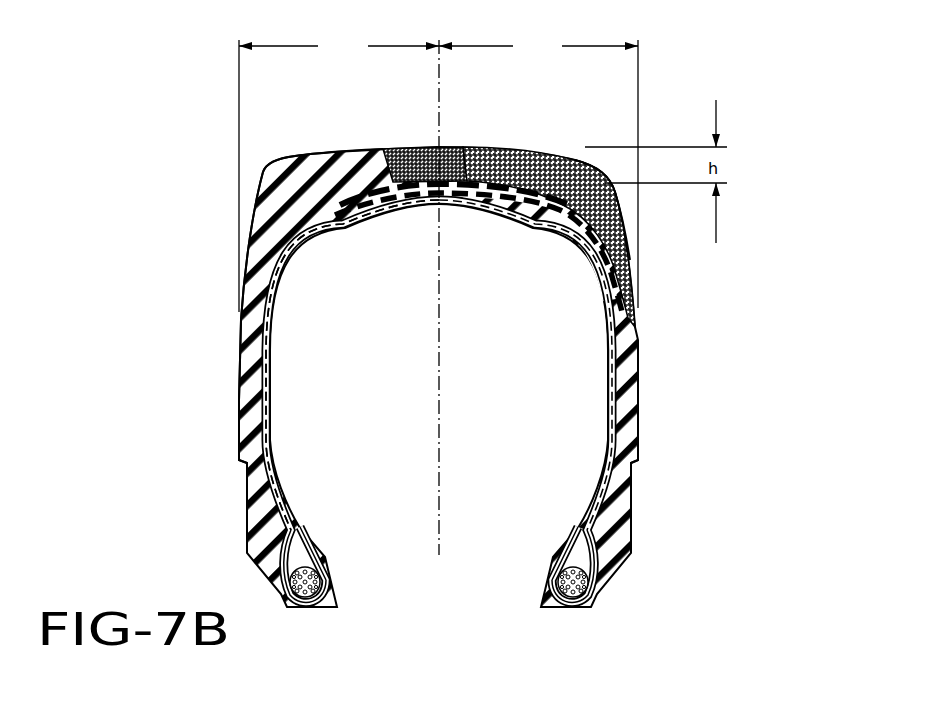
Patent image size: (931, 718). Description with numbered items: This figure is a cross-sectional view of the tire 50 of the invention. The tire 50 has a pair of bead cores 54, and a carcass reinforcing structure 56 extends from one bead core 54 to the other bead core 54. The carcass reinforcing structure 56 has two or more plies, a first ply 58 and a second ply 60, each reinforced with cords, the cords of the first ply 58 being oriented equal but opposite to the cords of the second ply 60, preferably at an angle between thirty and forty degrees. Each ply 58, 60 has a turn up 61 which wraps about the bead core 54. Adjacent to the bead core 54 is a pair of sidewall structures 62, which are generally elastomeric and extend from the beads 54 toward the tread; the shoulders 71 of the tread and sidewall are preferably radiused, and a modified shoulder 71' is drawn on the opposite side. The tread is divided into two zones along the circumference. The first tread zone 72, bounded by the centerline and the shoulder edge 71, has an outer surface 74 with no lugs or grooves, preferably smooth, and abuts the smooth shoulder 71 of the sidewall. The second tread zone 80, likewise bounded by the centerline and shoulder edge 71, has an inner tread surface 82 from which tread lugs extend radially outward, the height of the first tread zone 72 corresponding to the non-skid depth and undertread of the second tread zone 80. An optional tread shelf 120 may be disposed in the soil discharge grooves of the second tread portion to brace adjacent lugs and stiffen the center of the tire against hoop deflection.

The tire 50 is at (762, 252).
The bead core 54 is at (320, 592).
The carcass reinforcing structure 56 is at (270, 345).
The first ply 58 is at (266, 412).
The second ply 60 is at (352, 365).
The ply turnup 61 is at (298, 537).
The sidewall structure 62 is at (250, 442).
The shoulder 71 is at (229, 148).
The modified shoulder 71' is at (602, 172).
The first tread zone 72 is at (339, 176).
The outer surface 74 is at (338, 150).
The second tread zone 80 is at (538, 174).
The inner tread surface 82 is at (498, 182).
The tread shelf 120 is at (405, 182).